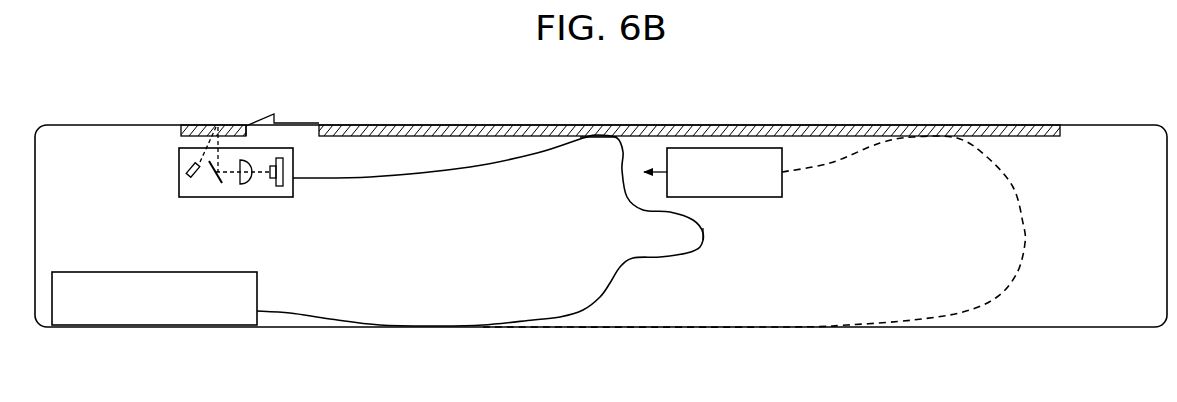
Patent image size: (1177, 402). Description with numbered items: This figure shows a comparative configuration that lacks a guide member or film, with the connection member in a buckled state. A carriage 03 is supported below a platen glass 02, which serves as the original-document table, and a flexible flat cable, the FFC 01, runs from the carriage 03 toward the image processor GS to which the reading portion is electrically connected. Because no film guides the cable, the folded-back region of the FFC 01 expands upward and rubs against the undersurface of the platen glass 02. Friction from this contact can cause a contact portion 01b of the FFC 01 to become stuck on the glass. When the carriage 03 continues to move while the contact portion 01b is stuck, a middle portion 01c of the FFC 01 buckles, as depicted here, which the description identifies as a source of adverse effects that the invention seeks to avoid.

The FFC 01 is at (588, 260).
The contact portion 01b is at (602, 137).
The middle portion 01c is at (703, 233).
The platen glass 02 is at (391, 125).
The carriage 03 is at (194, 200).
The image processor GS is at (90, 293).